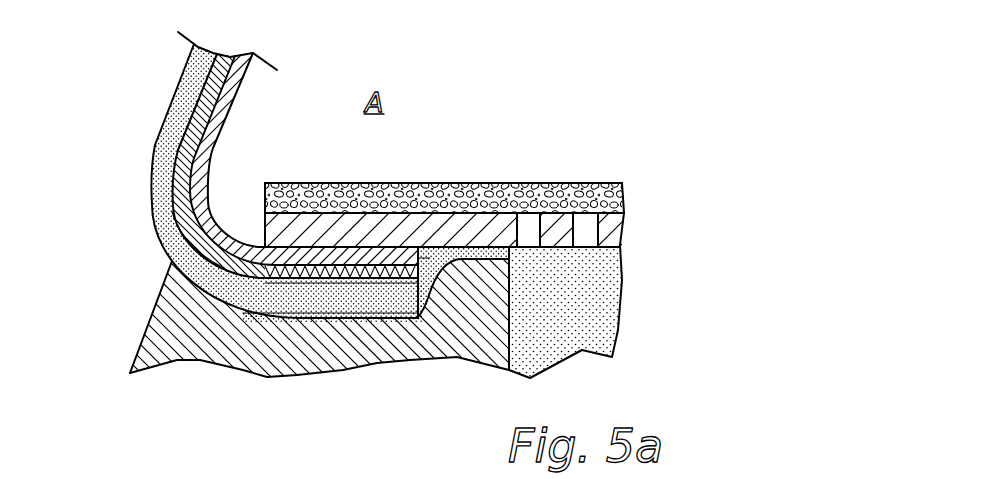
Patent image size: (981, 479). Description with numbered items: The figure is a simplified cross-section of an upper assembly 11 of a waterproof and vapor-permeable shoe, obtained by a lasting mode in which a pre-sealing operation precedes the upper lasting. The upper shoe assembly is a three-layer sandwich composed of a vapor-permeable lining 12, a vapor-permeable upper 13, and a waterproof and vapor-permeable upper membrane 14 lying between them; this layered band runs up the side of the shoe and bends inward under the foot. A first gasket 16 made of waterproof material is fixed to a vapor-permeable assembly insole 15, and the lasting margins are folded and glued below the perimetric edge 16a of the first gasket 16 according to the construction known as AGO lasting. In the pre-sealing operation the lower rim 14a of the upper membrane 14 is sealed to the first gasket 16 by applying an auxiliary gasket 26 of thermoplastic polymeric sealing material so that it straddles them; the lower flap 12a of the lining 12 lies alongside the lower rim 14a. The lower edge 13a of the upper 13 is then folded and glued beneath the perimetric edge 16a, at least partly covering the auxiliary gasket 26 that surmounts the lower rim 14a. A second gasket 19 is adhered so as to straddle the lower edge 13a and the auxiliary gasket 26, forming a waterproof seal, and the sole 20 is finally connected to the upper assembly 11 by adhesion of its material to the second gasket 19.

The upper assembly 11 is at (361, 239).
The vapor-permeable lining 12 is at (199, 88).
The lower flap of the lining 12a is at (400, 312).
The vapor-permeable upper 13 is at (145, 200).
The lower edge of the upper 13a is at (345, 295).
The waterproof and vapor-permeable upper membrane 14 is at (178, 132).
The lower rim of the upper membrane 14a is at (438, 357).
The vapor-permeable assembly insole 15 is at (433, 239).
The first gasket 16 is at (581, 200).
The perimetric edge of the first gasket 16a is at (328, 227).
The second gasket 19 is at (285, 322).
The sole 20 is at (122, 350).
The auxiliary gasket 26 is at (368, 270).